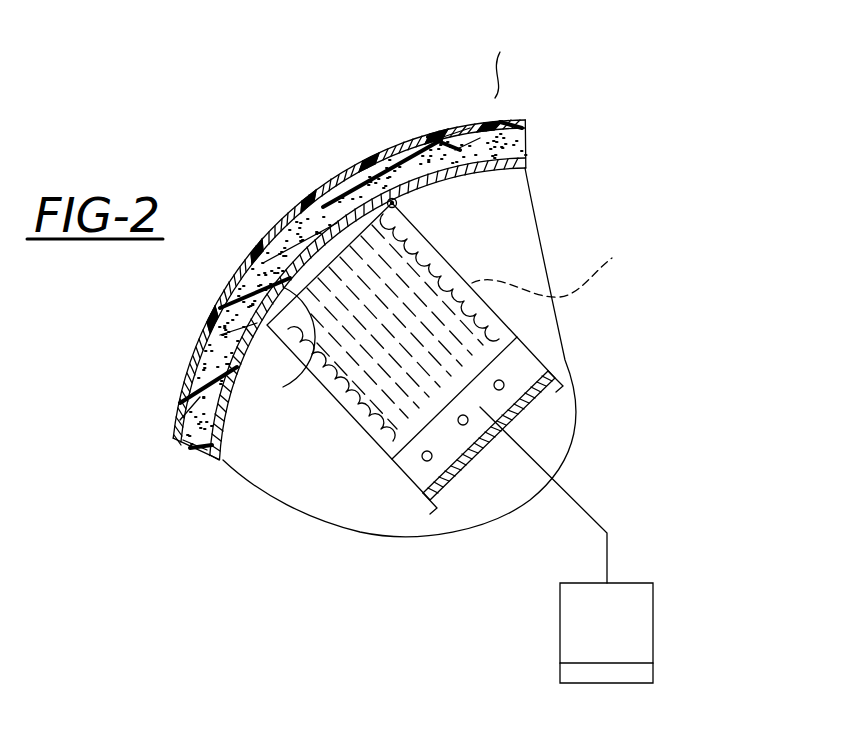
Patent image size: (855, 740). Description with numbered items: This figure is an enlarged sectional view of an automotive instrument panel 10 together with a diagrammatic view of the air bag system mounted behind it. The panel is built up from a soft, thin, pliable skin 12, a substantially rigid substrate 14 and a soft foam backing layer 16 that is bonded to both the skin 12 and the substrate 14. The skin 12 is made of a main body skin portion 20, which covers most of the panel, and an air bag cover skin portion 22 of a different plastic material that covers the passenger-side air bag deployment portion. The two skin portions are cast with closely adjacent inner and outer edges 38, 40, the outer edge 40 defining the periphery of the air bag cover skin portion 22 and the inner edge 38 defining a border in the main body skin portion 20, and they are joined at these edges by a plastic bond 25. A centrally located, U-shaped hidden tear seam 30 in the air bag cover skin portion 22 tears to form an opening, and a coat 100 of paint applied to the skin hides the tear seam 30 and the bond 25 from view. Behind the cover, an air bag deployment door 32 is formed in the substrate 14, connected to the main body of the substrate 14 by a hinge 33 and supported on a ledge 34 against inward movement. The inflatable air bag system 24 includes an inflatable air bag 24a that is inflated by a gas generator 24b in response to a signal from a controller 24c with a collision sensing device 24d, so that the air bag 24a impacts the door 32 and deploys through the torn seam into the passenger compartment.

The automotive instrument panel 10 is at (498, 93).
The skin 12 is at (508, 105).
The substrate 14 is at (505, 185).
The foam backing layer 16 is at (525, 136).
The main body skin portion 20 is at (528, 121).
The air bag cover skin portion 22 is at (340, 180).
The inflatable air bag system 24 is at (520, 312).
The inflatable air bag 24a is at (565, 264).
The gas generator 24b is at (527, 357).
The controller 24c is at (640, 613).
The collision sensing device 24d is at (643, 672).
The plastic bond 25 is at (523, 155).
The hidden tear seam 30 is at (220, 307).
The air bag deployment door 32 is at (303, 380).
The hinge 33 is at (394, 205).
The ledge 34 is at (267, 380).
The inner edge 38 is at (440, 140).
The outer edge 40 is at (437, 138).
The coat of paint 100 is at (276, 228).